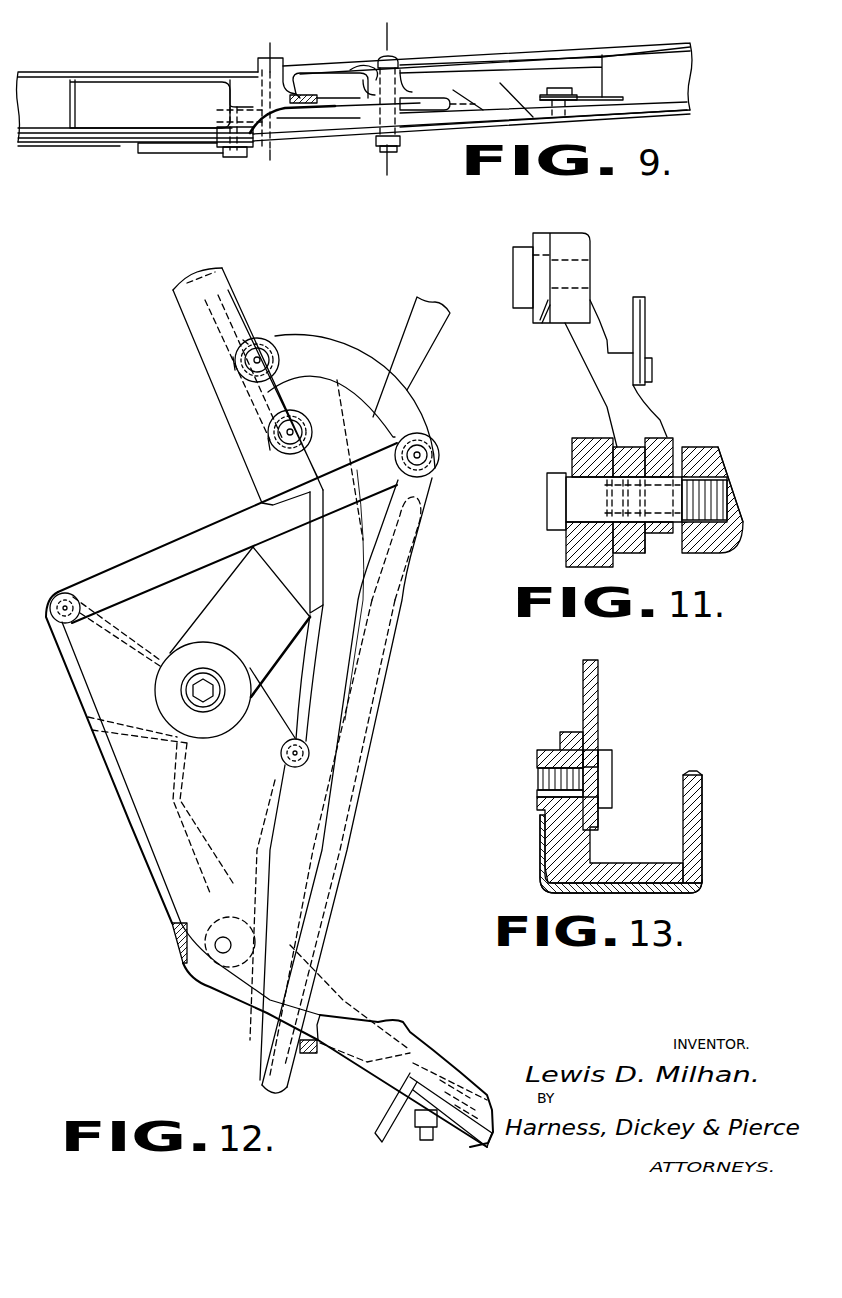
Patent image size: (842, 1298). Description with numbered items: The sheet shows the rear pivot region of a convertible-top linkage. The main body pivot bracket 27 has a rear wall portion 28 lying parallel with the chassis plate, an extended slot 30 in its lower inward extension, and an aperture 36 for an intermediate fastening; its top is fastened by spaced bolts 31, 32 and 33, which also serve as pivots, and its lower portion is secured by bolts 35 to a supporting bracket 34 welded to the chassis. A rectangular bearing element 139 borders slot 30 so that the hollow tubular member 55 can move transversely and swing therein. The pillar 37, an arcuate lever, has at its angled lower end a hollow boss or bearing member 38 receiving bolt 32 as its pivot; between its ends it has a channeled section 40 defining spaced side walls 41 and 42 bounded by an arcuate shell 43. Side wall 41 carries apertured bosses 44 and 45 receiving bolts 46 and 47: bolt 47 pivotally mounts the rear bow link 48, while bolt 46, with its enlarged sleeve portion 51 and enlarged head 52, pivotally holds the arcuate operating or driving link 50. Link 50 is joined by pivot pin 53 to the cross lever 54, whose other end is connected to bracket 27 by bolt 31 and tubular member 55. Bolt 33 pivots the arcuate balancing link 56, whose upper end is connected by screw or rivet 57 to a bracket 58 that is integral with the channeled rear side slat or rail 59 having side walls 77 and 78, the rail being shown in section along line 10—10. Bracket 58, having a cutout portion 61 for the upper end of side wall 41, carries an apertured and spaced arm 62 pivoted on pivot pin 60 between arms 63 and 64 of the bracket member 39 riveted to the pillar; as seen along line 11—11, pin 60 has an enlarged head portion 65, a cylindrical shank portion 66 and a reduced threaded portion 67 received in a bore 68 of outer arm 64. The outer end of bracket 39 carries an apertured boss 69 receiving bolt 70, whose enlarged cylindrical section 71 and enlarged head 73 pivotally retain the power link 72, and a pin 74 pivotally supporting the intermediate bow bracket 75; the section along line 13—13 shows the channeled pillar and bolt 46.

In FIG. 9, the section line 10— 10 is at (300, 155).
In FIG. 9, the section line 11— 11 is at (413, 177).
In FIG. 12, the section line 13— 13 is at (202, 411).
In FIG. 12, the main body pivot bracket 27 is at (105, 782).
In FIG. 12, the rear wall portion 28 is at (313, 826).
In FIG. 12, the extended slot 30 is at (262, 1010).
In FIG. 12, the bolt 31 is at (75, 622).
In FIG. 12, the bolt 32 is at (209, 683).
In FIG. 12, the bolt 33 is at (300, 740).
In FIG. 12, the supporting bracket 34 is at (487, 1150).
In FIG. 12, the bolts 35 is at (427, 1140).
In FIG. 12, the aperture 36 is at (222, 939).
In FIG. 9, the pillar 37 is at (664, 43).
In FIG. 13, the pillar 37 is at (540, 868).
In FIG. 12, the pillar 37 is at (250, 478).
In FIG. 12, the hollow boss or bearing member 38 is at (155, 684).
In FIG. 9, the bracket member 39 is at (302, 88).
In FIG. 11, the bracket member 39 is at (593, 370).
In FIG. 13, the channeled section 40 is at (646, 858).
In FIG. 9, the side wall 41 is at (689, 112).
In FIG. 13, the side wall 41 is at (560, 828).
In FIG. 9, the side wall 42 is at (688, 47).
In FIG. 13, the side wall 42 is at (692, 812).
In FIG. 13, the arcuate shell 43 is at (705, 886).
In FIG. 13, the apertured boss 44 is at (538, 757).
In FIG. 12, the apertured boss 44 is at (280, 375).
In FIG. 12, the apertured boss 45 is at (310, 432).
In FIG. 13, the bolt 46 is at (540, 782).
In FIG. 12, the bolt 46 is at (255, 365).
In FIG. 12, the bolt 47 is at (282, 437).
In FIG. 12, the rear bow link 48 is at (414, 303).
In FIG. 13, the arcuate operating or driving link 50 is at (598, 697).
In FIG. 12, the arcuate operating or driving link 50 is at (352, 350).
In FIG. 13, the enlarged sleeve portion 51 is at (592, 768).
In FIG. 13, the enlarged head 52 is at (608, 782).
In FIG. 12, the pivot pin 53 is at (435, 448).
In FIG. 12, the cross lever 54 is at (177, 551).
In FIG. 12, the hollow tubular member 55 is at (418, 556).
In FIG. 9, the arcuate balancing link 56 is at (614, 90).
In FIG. 12, the arcuate balancing link 56 is at (340, 650).
In FIG. 9, the screw or rivet 57 is at (566, 88).
In FIG. 9, the bracket 58 is at (350, 126).
In FIG. 11, the bracket 58 is at (566, 553).
In FIG. 9, the rear side slat or rail 59 is at (40, 146).
In FIG. 9, the pivot pin 60 is at (405, 143).
In FIG. 11, the pivot pin 60 is at (547, 515).
In FIG. 9, the cutout portion 61 is at (454, 133).
In FIG. 9, the apertured and spaced arm 62 is at (436, 80).
In FIG. 11, the apertured and spaced arm 62 is at (662, 447).
In FIG. 9, the arm 63 is at (366, 96).
In FIG. 11, the arm 63 is at (632, 447).
In FIG. 9, the outer arm 64 is at (374, 66).
In FIG. 11, the outer arm 64 is at (718, 450).
In FIG. 11, the enlarged head portion 65 is at (547, 480).
In FIG. 11, the cylindrical shank portion 66 is at (580, 492).
In FIG. 11, the reduced threaded portion 67 is at (713, 497).
In FIG. 11, the bore 68 is at (737, 504).
In FIG. 9, the apertured boss 69 is at (219, 148).
In FIG. 11, the apertured boss 69 is at (571, 233).
In FIG. 9, the bolt 70 is at (232, 160).
In FIG. 11, the bolt 70 is at (513, 259).
In FIG. 11, the enlarged cylindrical section 71 is at (540, 323).
In FIG. 9, the power link 72 is at (177, 152).
In FIG. 11, the power link 72 is at (535, 233).
In FIG. 11, the enlarged head 73 is at (522, 280).
In FIG. 11, the pin 74 is at (652, 370).
In FIG. 9, the intermediate bow bracket 75 is at (316, 104).
In FIG. 11, the intermediate bow bracket 75 is at (643, 337).
In FIG. 9, the side wall 77 is at (24, 144).
In FIG. 9, the side wall 78 is at (28, 76).
In FIG. 12, the rectangular bearing element 139 is at (192, 975).